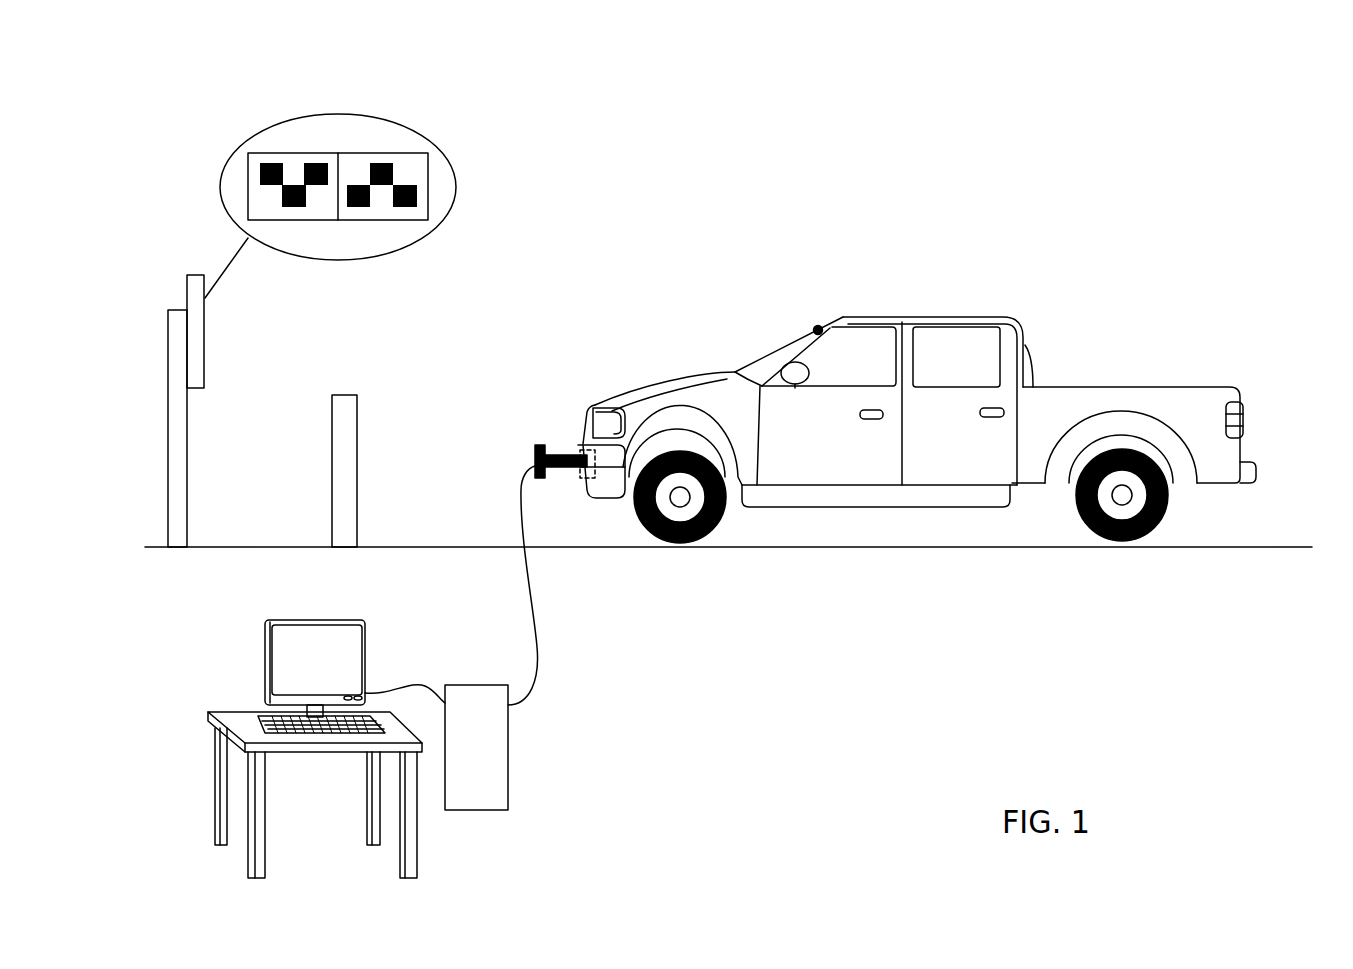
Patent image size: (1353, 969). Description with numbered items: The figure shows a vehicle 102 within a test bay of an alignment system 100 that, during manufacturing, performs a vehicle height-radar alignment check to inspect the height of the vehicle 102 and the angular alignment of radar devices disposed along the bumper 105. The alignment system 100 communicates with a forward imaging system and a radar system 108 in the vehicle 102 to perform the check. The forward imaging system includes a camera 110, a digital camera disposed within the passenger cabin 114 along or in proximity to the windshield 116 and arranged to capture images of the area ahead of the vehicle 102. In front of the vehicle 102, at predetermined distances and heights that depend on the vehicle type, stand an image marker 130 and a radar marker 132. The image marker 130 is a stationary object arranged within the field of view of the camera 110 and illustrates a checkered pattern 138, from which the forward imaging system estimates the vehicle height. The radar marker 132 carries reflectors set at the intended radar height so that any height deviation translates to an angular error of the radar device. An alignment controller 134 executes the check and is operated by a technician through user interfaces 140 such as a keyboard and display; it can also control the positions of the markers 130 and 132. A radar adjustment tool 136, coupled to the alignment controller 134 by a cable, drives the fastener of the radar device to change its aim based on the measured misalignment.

The alignment system 100 is at (226, 624).
The vehicle 102 is at (917, 428).
The bumper 105 is at (620, 498).
The radar system 108 is at (583, 480).
The camera 110 is at (820, 326).
The passenger cabin 114 is at (962, 357).
The windshield 116 is at (781, 345).
The image marker 130 is at (187, 300).
The radar marker 132 is at (332, 475).
The alignment controller 134 is at (508, 748).
The radar adjustment tool 136 is at (560, 450).
The checkered pattern 138 is at (320, 152).
The user interfaces 140 is at (253, 625).